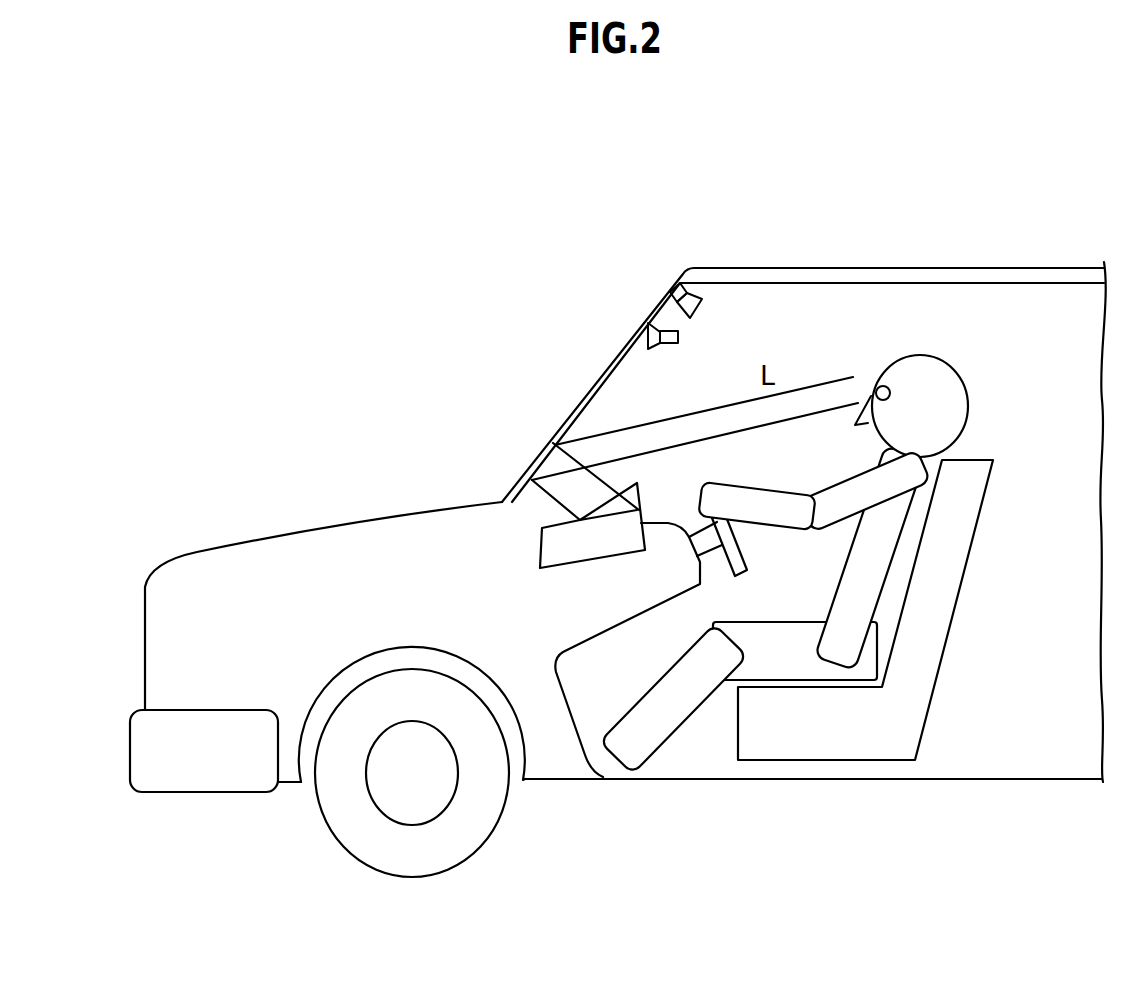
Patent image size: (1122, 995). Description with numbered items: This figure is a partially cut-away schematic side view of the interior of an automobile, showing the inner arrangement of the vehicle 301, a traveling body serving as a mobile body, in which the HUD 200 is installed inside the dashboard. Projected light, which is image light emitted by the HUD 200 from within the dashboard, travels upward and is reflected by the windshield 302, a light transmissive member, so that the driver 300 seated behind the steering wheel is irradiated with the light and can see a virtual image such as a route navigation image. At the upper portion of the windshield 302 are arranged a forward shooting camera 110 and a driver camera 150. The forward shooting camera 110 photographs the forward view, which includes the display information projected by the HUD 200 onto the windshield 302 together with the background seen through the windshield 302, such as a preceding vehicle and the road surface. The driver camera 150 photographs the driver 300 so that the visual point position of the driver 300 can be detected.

The forward shooting camera 110 is at (665, 345).
The driver camera 150 is at (698, 300).
The HUD 200 is at (563, 567).
The driver 300 is at (968, 397).
The vehicle 301 is at (998, 779).
The windshield 302 is at (624, 334).